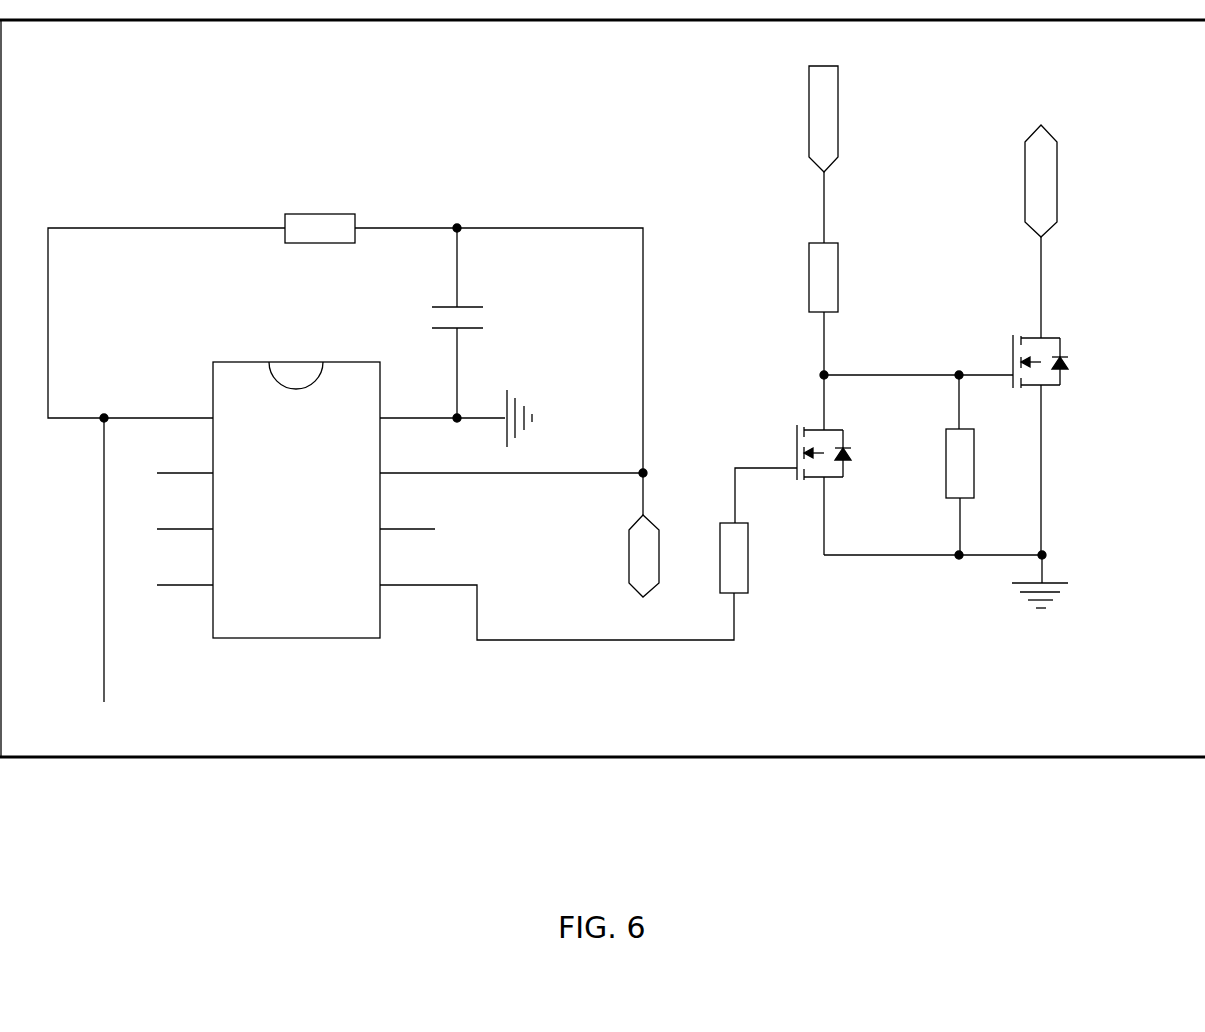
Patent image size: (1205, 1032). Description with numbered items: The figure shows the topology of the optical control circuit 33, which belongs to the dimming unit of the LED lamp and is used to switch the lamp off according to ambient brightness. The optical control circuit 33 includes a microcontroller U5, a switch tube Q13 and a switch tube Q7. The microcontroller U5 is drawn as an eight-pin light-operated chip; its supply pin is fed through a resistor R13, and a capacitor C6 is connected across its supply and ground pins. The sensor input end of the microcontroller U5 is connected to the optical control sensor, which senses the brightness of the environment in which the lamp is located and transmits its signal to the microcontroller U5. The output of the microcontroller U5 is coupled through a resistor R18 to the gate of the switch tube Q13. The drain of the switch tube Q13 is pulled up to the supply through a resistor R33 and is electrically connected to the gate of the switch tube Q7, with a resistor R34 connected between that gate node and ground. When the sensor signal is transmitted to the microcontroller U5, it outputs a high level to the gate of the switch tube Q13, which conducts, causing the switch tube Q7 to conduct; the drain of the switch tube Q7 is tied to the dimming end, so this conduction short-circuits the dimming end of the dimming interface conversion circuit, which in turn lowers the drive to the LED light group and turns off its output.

The optical control circuit 33 is at (602, 432).
The microcontroller U5 is at (425, 491).
The resistor 510K R13 is at (323, 229).
The capacitor 470pF/50V C6 is at (513, 323).
The resistor 20K R33 is at (840, 293).
The resistor 1K R18 is at (754, 548).
The resistor 100K R34 is at (983, 467).
The switch tube Q13 is at (849, 465).
The switch tube Q7 is at (1067, 432).